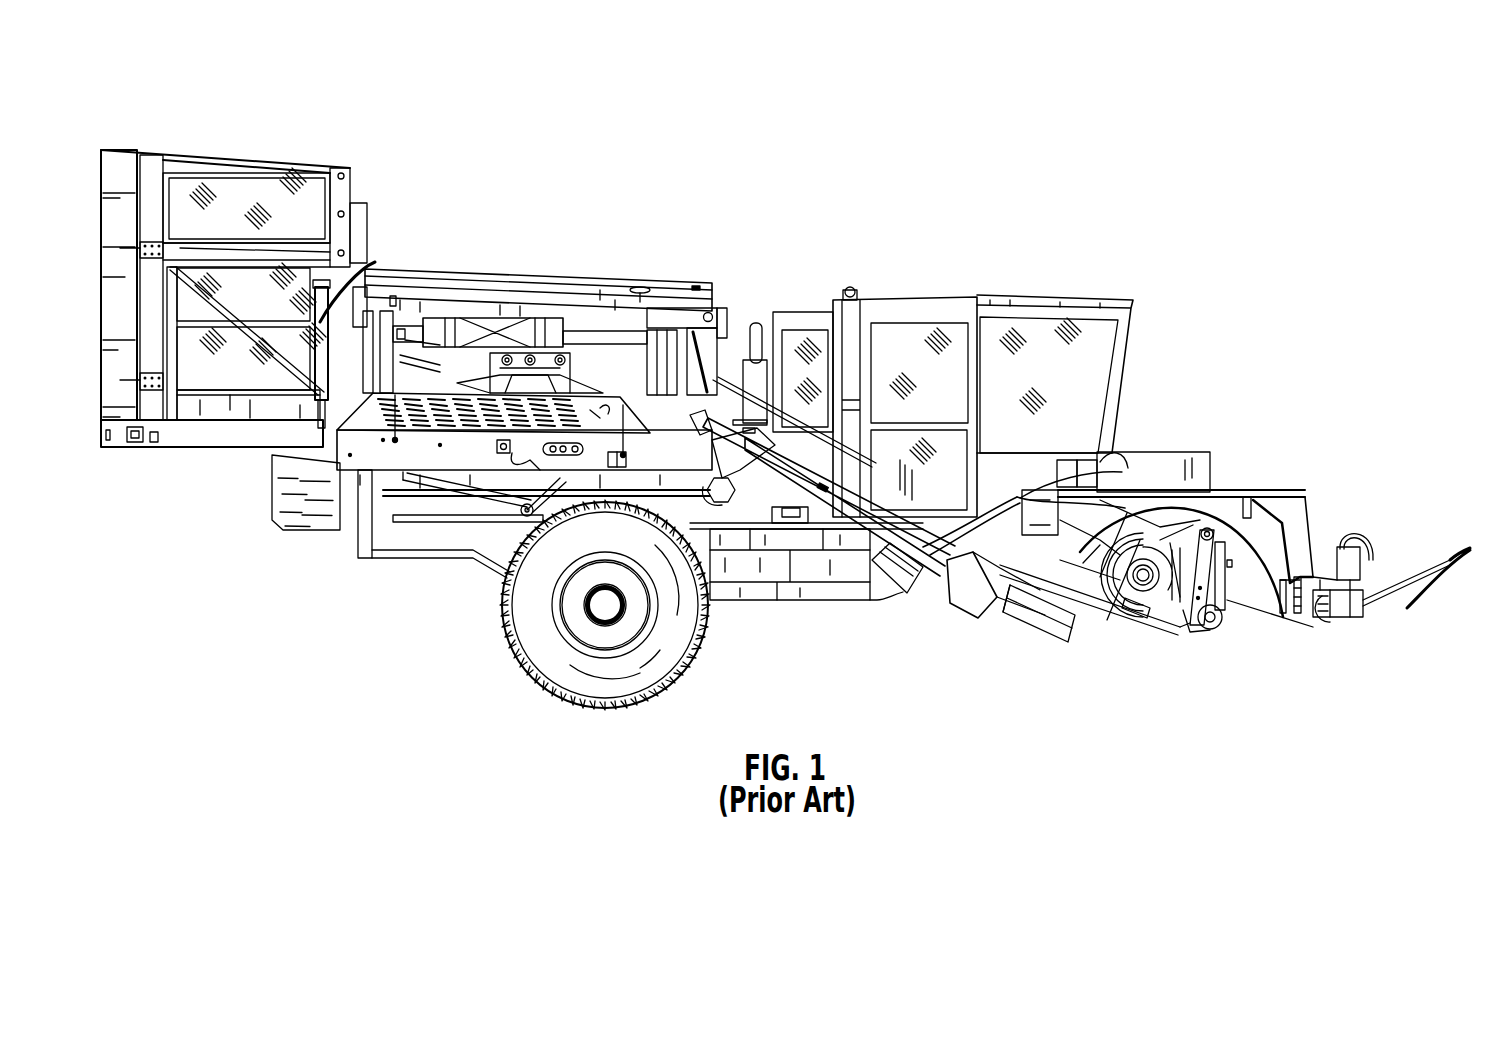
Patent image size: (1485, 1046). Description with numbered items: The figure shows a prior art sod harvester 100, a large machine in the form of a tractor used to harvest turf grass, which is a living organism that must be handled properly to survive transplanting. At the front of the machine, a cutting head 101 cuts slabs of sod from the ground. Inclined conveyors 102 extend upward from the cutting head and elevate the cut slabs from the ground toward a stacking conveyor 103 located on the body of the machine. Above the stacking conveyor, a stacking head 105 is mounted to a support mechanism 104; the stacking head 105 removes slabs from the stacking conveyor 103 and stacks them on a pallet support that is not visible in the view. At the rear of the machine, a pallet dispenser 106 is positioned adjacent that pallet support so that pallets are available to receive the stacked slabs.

The sod harvester 100 is at (1160, 105).
The cutting head 101 is at (1209, 638).
The inclined conveyor 102 is at (908, 595).
The stacking conveyor 103 is at (485, 450).
The support mechanism 104 is at (575, 337).
The stacking head 105 is at (598, 368).
The pallet dispenser 106 is at (362, 182).